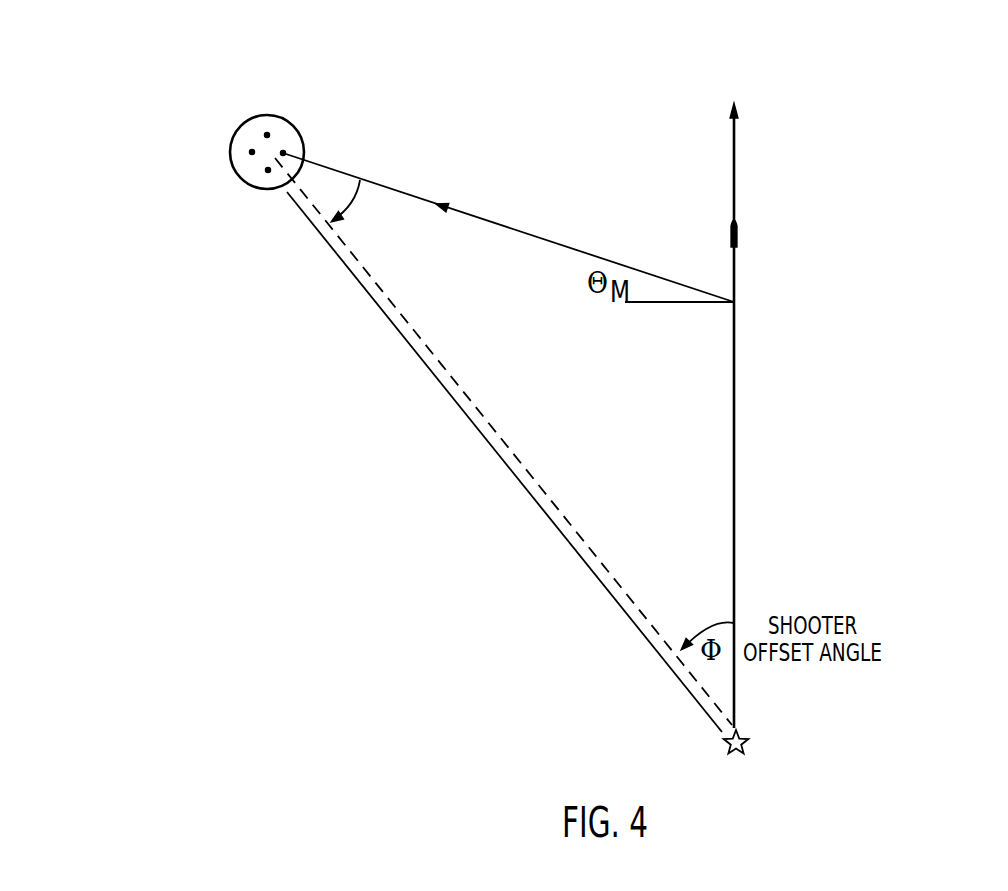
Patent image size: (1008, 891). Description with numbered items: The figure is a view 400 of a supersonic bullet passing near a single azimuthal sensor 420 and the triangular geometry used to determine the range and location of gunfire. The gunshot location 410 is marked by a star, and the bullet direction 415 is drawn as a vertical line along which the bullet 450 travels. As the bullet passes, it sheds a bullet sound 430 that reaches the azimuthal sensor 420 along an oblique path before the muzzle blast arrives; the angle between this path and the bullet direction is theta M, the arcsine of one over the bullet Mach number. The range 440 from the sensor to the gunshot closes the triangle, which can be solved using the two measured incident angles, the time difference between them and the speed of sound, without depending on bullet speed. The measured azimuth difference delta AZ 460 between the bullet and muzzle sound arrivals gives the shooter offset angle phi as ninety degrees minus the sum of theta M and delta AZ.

The gunshot detection geometry / system 400 is at (188, 78).
The gunshot location 410 is at (749, 745).
The bullet direction 415 is at (735, 133).
The azimuthal sensor 420 is at (237, 127).
The bullet sound path 430 is at (500, 226).
The range 440 is at (486, 440).
The bullet 450 is at (738, 237).
The azimuth difference (delta AZ) 460 is at (374, 207).